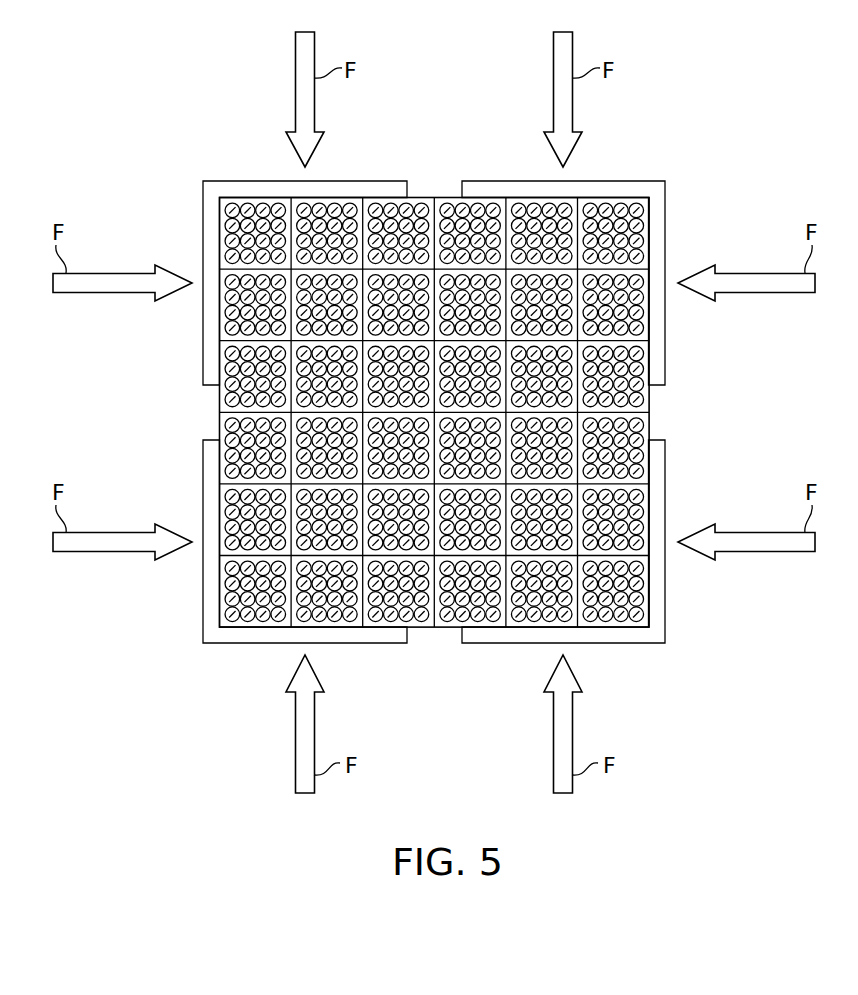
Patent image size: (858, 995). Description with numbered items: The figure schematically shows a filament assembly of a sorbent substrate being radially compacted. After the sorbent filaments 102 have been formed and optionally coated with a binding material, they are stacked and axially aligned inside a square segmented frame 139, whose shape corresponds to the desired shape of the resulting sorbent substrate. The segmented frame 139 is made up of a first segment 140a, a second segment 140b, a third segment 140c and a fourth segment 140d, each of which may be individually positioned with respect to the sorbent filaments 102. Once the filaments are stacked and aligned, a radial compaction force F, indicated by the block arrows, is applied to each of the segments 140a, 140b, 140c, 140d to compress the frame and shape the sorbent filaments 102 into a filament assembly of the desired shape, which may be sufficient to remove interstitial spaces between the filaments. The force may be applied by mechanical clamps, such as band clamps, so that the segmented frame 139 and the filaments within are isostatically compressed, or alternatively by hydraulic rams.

The segmented frame 139 is at (658, 140).
The sorbent filaments 102 is at (427, 196).
The first segment 140a is at (669, 189).
The second segment 140b is at (669, 633).
The third segment 140c is at (201, 633).
The fourth segment 140d is at (201, 189).